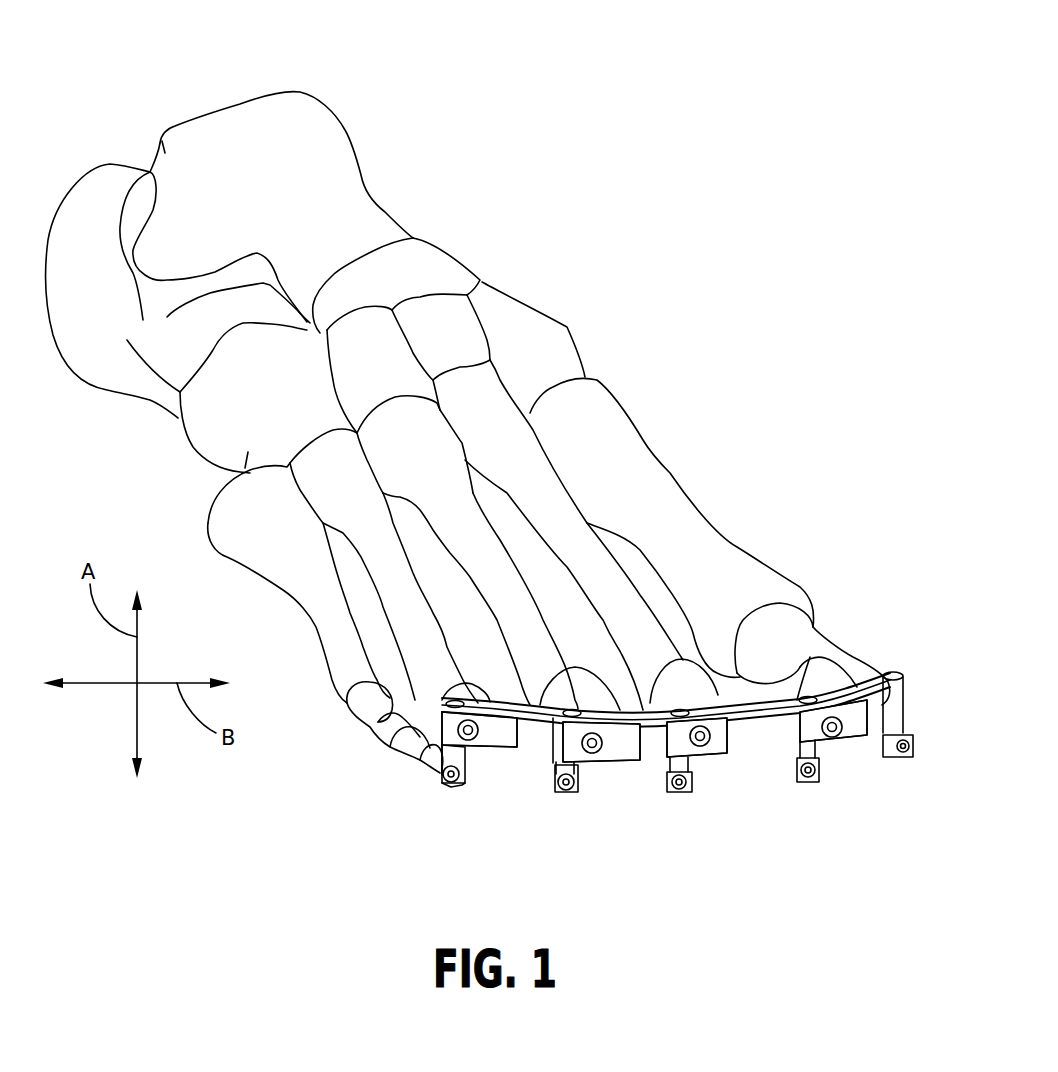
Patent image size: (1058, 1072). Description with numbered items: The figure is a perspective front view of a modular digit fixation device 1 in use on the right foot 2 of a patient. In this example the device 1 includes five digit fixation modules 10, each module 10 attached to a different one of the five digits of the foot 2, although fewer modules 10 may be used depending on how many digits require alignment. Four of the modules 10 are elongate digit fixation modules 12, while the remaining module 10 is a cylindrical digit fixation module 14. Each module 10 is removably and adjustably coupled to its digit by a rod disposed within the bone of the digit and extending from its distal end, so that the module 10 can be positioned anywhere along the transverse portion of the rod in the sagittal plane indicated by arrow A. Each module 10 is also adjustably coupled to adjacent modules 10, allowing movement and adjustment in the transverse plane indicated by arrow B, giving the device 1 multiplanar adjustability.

The modular digit fixation device 1 is at (890, 603).
The right foot 2 is at (458, 178).
The digit fixation module 10 is at (463, 747).
The elongate digit fixation module 12 is at (630, 710).
The cylindrical digit fixation module 14 is at (453, 777).